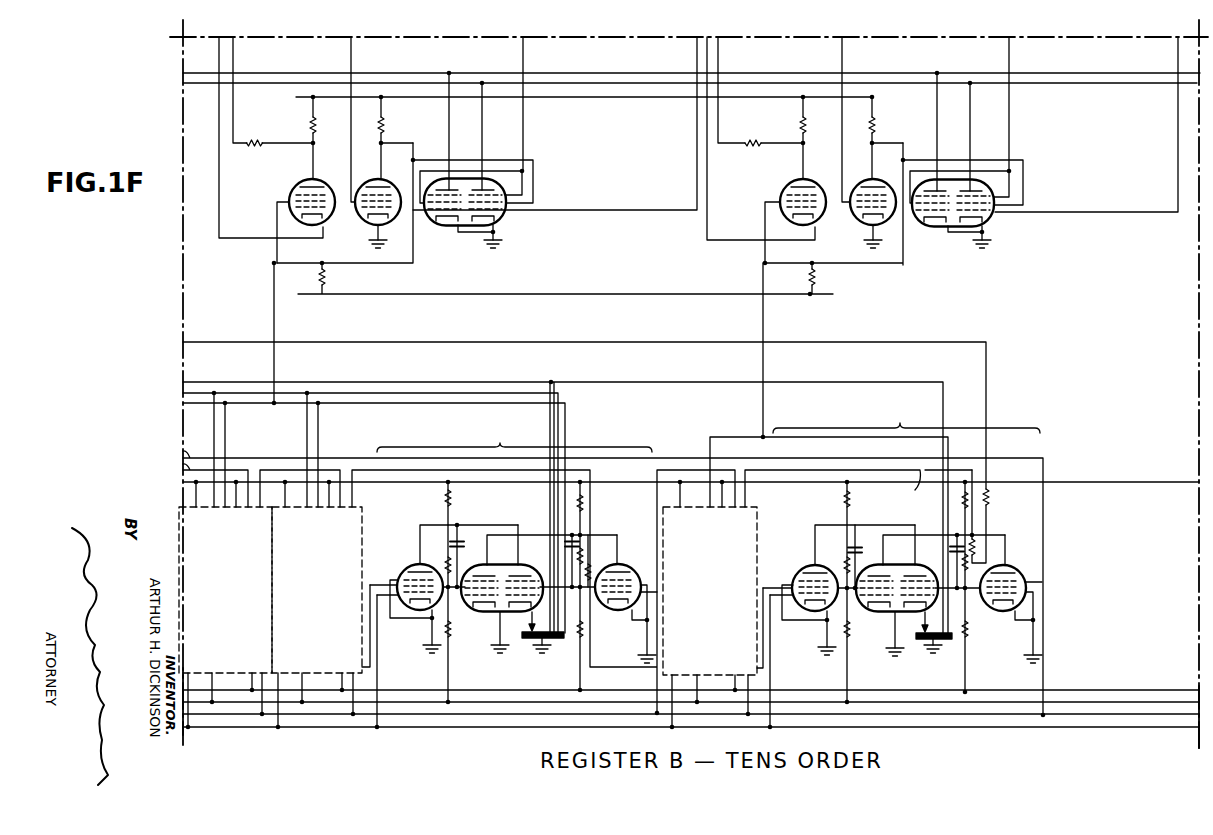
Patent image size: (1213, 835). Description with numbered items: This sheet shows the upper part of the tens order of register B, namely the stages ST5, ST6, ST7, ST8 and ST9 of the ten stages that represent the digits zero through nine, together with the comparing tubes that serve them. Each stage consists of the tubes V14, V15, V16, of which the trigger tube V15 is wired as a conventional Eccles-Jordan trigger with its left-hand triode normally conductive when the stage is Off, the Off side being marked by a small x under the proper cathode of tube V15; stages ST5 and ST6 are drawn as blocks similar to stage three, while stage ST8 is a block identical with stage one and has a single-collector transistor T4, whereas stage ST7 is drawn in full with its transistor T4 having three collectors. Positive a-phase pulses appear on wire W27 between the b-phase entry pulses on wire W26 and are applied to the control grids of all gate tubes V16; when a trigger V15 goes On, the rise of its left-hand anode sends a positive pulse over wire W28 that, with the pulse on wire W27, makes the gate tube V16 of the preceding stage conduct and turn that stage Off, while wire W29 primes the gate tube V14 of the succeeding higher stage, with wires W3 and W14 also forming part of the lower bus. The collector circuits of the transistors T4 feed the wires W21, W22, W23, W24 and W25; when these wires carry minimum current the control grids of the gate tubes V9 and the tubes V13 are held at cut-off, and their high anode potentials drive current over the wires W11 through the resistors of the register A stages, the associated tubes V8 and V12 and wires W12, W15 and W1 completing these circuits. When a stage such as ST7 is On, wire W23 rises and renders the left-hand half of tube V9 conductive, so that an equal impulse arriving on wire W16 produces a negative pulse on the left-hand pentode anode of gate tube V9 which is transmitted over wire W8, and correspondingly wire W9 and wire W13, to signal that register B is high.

The wire W1 is at (631, 100).
The wire W3 is at (782, 690).
The wire W8 is at (1142, 75).
The wire W9 is at (1068, 85).
The wire W11 is at (235, 58).
The wire W12 is at (219, 201).
The wire W13 is at (696, 58).
The wire W14 is at (472, 703).
The wire W15 is at (352, 58).
The wire W16 is at (525, 58).
The wire W21 is at (303, 382).
The wire W22 is at (447, 392).
The wire W23 is at (276, 318).
The wire W24 is at (766, 318).
The wire W25 is at (565, 343).
The wire W26 is at (297, 728).
The wire W27 is at (392, 715).
The wire W28 is at (183, 460).
The wire W29 is at (372, 665).
The tube V8 is at (366, 234).
The gate tube V9 is at (438, 228).
The tube V12 is at (706, 233).
The tube V13 is at (300, 182).
The gate tube V14 is at (407, 564).
The trigger tube V15 is at (477, 609).
The gate tube V16 is at (610, 612).
The transistor T4 is at (528, 641).
The stage ST5 is at (240, 534).
The stage ST6 is at (331, 534).
The stage ST7 is at (514, 440).
The stage ST8 is at (727, 534).
The stage ST9 is at (906, 417).